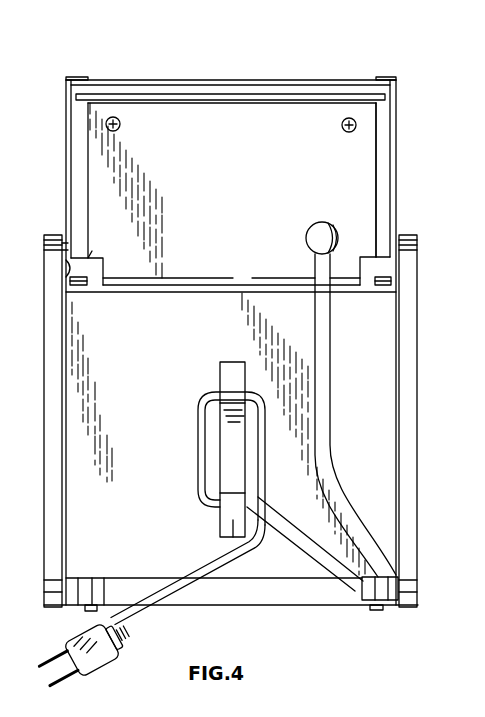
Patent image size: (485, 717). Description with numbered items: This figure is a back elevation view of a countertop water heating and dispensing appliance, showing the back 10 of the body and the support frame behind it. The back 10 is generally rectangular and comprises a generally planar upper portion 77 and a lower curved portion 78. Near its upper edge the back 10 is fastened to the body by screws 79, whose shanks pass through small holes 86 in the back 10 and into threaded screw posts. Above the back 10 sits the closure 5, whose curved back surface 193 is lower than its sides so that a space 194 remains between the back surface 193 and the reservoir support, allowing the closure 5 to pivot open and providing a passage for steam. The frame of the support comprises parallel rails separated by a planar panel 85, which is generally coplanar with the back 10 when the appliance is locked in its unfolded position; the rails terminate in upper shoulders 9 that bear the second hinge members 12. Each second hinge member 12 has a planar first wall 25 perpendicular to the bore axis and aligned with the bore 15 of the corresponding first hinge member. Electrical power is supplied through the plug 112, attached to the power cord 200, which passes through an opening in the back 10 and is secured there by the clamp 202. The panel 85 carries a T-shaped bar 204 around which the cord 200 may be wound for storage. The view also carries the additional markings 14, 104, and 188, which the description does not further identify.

The closure 5 is at (320, 80).
The upper shoulders 9 is at (51, 235).
The back 10 is at (286, 166).
The second hinge members 12 is at (3, 201).
The section line 14 is at (232, 38).
The bore 15 is at (238, 25).
The planar first wall 25 is at (397, 211).
The upper portion 77 is at (362, 173).
The lower curved portion 78 is at (157, 290).
The screws 79 is at (358, 128).
The planar panel 85 is at (180, 396).
The small holes 86 is at (100, 258).
The base member 104 is at (12, 333).
The plug 112 is at (98, 660).
The latch clip 188 is at (68, 275).
The curved back surface 193 is at (353, 85).
The space 194 is at (121, 95).
The power cord 200 is at (147, 617).
The clamp 202 is at (313, 232).
The T-shaped bar 204 is at (230, 360).